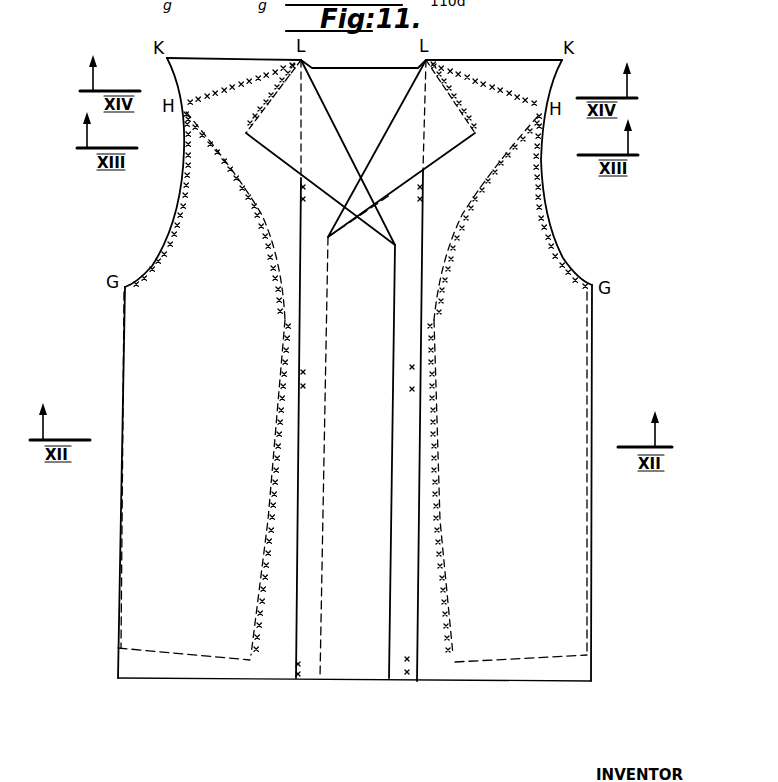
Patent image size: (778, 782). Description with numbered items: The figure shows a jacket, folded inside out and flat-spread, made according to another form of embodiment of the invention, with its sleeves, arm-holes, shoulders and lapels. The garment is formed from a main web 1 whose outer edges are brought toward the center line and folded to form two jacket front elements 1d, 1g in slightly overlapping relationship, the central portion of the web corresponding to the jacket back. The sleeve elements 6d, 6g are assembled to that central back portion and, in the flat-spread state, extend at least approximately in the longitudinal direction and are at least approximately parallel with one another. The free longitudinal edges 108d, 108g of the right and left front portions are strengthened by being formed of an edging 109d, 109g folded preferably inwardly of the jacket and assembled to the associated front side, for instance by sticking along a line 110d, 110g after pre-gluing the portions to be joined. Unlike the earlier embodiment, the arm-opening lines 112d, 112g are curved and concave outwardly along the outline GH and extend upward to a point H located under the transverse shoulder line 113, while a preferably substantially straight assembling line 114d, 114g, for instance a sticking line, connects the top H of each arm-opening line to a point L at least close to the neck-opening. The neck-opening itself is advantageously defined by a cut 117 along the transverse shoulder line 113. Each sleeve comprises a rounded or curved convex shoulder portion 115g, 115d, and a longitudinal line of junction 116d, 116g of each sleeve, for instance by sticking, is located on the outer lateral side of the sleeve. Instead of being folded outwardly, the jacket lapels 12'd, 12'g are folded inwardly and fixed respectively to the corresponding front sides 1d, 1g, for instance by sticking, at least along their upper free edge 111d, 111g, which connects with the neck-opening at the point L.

The main web 1 is at (370, 80).
The left jacket front element 1g is at (137, 517).
The right jacket front element 1d is at (577, 547).
The left sleeve element 6g is at (167, 654).
The right sleeve element 6d is at (540, 658).
The left jacket lapel 12'g is at (320, 152).
The right jacket lapel 12'd is at (401, 148).
The left free longitudinal edge 108g is at (390, 488).
The right free longitudinal edge 108d is at (322, 617).
The left edging 109g is at (298, 467).
The right edging 109d is at (415, 545).
The left sticking line 110g is at (303, 373).
The right sticking line 110d is at (413, 390).
The left lapel upper free edge 111g is at (268, 108).
The right lapel upper free edge 111d is at (457, 108).
The left arm-opening line 112g is at (170, 208).
The right arm-opening line 112d is at (552, 223).
The transverse shoulder line 113 is at (222, 58).
The left assembling line 114g is at (207, 92).
The right assembling line 114d is at (512, 97).
The left shoulder portion 115g is at (263, 217).
The right shoulder portion 115d is at (450, 228).
The left sleeve junction line 116g is at (268, 457).
The right sleeve junction line 116d is at (445, 458).
The cut 117 is at (349, 67).